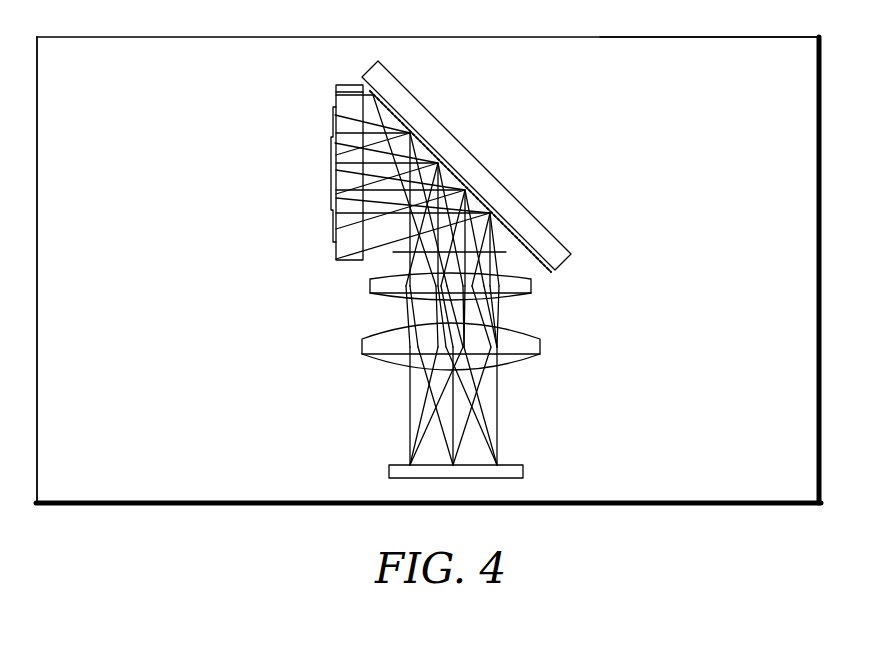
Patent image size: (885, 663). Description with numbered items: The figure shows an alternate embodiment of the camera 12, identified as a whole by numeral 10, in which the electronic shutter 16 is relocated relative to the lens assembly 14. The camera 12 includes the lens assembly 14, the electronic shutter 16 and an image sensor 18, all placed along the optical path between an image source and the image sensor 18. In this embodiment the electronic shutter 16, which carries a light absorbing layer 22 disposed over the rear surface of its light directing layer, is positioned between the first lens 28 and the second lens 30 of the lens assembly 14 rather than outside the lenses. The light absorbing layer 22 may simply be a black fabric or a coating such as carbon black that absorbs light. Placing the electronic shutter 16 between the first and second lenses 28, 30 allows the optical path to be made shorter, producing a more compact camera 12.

The optical scanning system 10 is at (803, 37).
The camera 12 is at (798, 193).
The lens assembly 14 is at (288, 343).
The electronic shutter 16 is at (355, 96).
The image sensor 18 is at (537, 471).
The light absorbing layer 22 is at (522, 191).
The first lens 28 is at (354, 261).
The second lens 30 is at (370, 286).